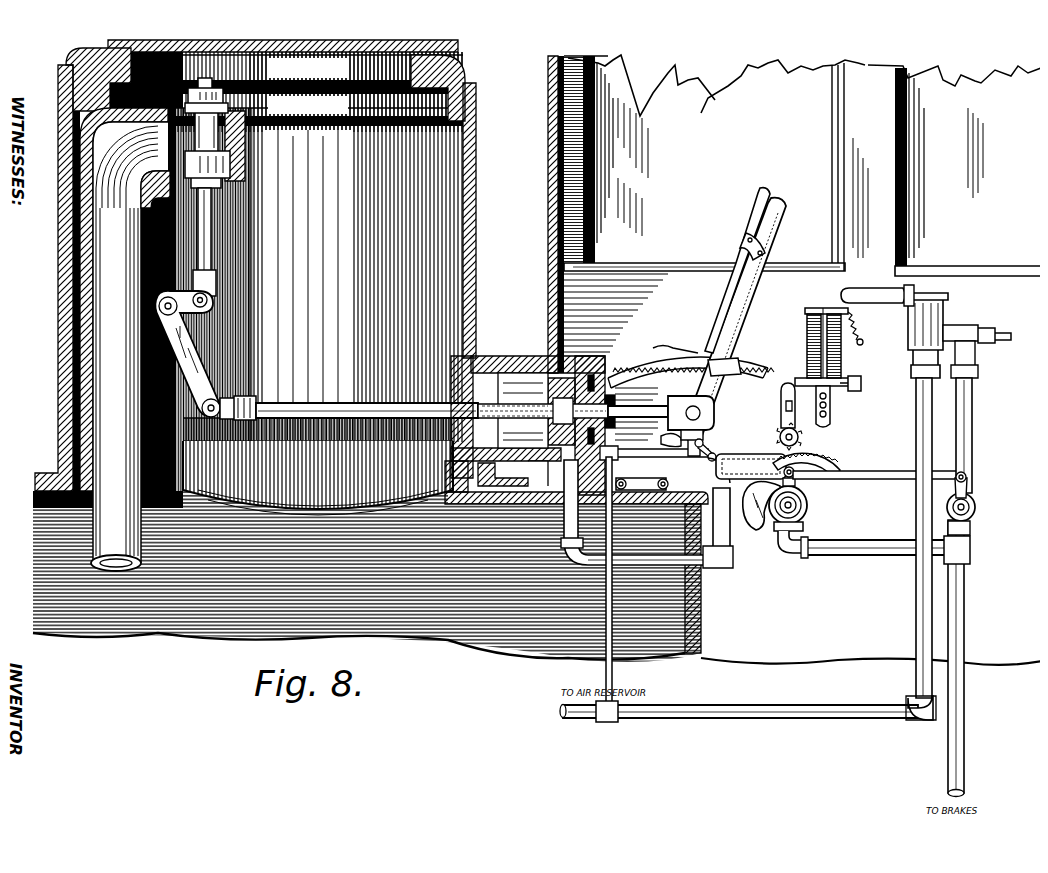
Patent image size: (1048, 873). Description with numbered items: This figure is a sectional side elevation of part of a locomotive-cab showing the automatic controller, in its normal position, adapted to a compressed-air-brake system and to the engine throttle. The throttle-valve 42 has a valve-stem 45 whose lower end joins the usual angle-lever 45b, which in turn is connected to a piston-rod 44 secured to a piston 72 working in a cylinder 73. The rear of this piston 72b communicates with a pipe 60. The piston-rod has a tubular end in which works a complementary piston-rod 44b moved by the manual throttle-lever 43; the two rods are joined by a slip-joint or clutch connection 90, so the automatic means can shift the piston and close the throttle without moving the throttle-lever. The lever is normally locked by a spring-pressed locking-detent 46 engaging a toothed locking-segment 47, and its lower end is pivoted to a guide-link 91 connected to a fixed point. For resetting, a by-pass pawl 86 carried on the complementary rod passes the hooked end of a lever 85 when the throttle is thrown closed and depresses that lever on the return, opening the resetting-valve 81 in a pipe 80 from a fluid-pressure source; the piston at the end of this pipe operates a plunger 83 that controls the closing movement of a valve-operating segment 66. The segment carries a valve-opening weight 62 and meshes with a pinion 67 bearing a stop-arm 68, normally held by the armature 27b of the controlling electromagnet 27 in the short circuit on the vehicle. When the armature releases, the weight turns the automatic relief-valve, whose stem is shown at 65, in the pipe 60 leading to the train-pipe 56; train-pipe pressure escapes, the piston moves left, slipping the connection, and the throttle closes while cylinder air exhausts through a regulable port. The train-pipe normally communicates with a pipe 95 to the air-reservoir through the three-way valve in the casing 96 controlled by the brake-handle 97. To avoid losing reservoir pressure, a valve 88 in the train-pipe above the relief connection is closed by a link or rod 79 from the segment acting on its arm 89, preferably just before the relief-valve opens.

The throttle-valve 42 is at (222, 165).
The valve-stem 45 is at (205, 226).
The angle-lever 45b is at (185, 343).
The piston-rod 44 is at (302, 394).
The piston 72 is at (255, 265).
The piston 72b is at (520, 356).
The cylinder 73 is at (505, 456).
The slip-joint or clutch connection 90 is at (600, 380).
The throttle-lever 43 is at (727, 295).
The spring-pressed locking-detent 46 is at (700, 327).
The toothed locking-segment 47 is at (650, 338).
The complementary piston-rod 44b is at (625, 408).
The lever 85 is at (660, 432).
The by-pass pawl 86 is at (695, 430).
The resetting-valve 81 is at (693, 441).
The pipe 80 is at (661, 476).
The guide-link 91 is at (650, 472).
The plunger 83 is at (764, 456).
The stop-arm 68 is at (780, 393).
The controlling electromagnet 27 is at (835, 343).
The armature 27b is at (836, 384).
The pinion 67 is at (790, 429).
The valve-operating segment 66 is at (813, 453).
The automatic relief-valve stem 65 is at (800, 492).
The valve-opening weight 62 is at (745, 507).
The pipe 60 is at (833, 530).
The link or rod 79 is at (893, 471).
The casing 96 is at (920, 312).
The brake-handle 97 is at (860, 272).
The pipe 95 is at (908, 610).
The train-pipe 56 is at (957, 622).
The valve 88 is at (968, 496).
The arm 89 is at (960, 467).